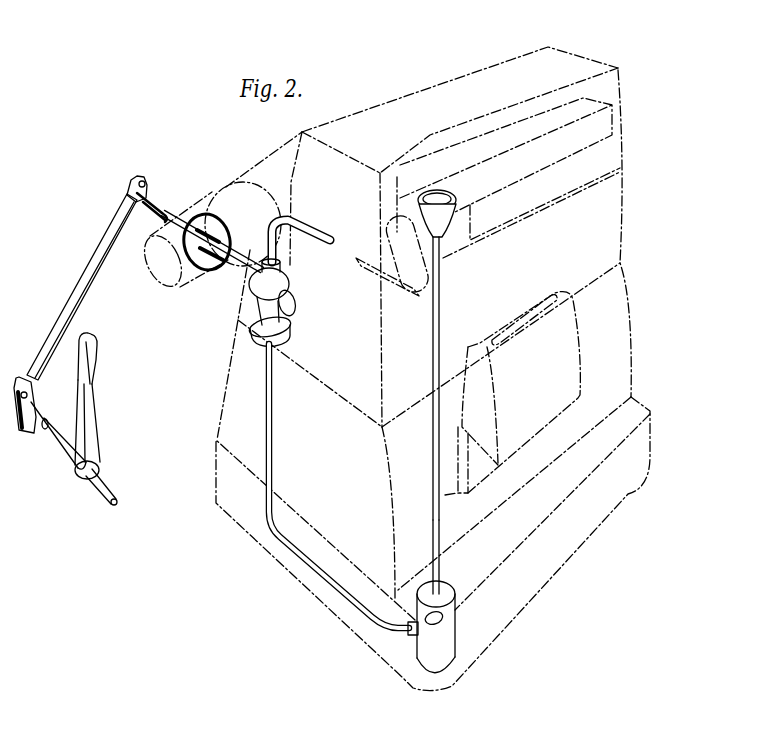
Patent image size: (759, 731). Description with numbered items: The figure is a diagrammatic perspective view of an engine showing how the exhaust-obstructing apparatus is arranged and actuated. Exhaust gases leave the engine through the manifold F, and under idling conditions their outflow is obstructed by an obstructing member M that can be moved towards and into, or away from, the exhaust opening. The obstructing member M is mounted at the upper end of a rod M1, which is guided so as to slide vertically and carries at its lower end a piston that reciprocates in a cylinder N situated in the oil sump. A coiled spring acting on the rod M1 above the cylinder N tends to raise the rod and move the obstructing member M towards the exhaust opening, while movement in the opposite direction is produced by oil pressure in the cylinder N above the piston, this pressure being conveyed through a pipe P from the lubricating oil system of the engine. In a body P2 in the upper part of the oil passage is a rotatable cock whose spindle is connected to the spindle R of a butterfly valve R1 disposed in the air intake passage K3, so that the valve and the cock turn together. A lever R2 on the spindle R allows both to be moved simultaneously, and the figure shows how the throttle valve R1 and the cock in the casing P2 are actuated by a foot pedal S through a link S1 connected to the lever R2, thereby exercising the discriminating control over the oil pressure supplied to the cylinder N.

The manifold F is at (516, 132).
The obstructing member M is at (437, 192).
The rod M1 is at (435, 528).
The cylinder N is at (433, 647).
The pipe P is at (314, 570).
The body P2 is at (268, 292).
The spindle R is at (240, 266).
The butterfly valve R1 is at (215, 226).
The lever R2 is at (160, 203).
The foot pedal S is at (88, 355).
The link S1 is at (81, 289).
The air intake passage K3 is at (162, 262).